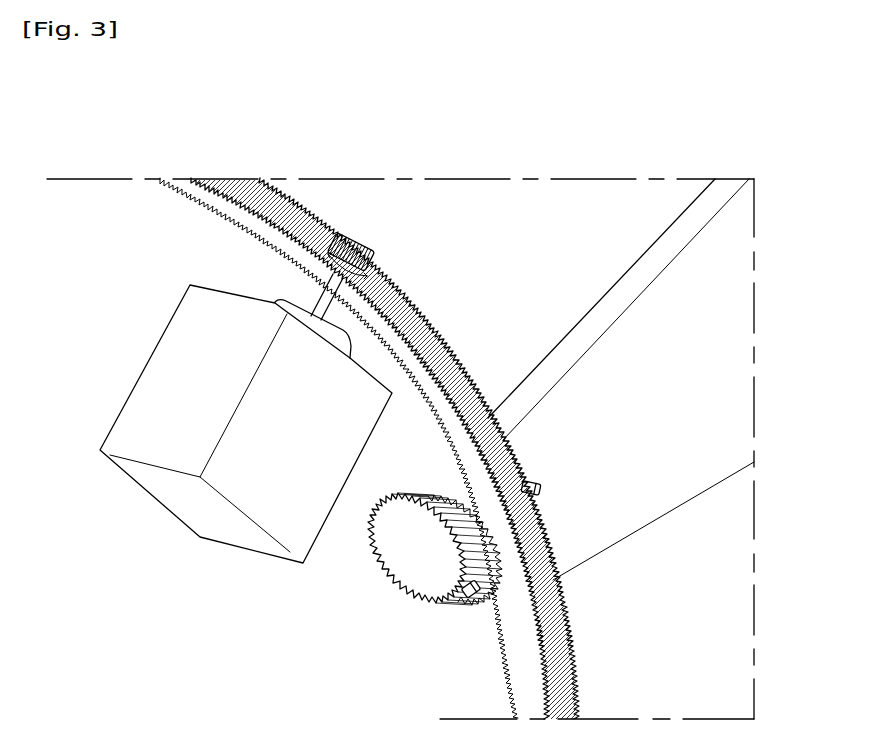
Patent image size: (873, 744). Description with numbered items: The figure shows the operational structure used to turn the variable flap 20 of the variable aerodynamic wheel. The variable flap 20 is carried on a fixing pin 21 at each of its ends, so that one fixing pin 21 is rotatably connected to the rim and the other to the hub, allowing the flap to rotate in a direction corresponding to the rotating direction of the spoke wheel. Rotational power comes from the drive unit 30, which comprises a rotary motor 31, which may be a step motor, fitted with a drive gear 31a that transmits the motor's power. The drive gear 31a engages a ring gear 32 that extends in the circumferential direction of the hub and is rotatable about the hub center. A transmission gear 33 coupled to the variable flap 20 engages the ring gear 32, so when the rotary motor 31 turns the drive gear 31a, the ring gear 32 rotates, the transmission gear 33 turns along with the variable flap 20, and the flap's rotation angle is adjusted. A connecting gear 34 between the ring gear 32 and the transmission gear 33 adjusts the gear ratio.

The variable flap 20 is at (727, 345).
The fixing pin 21 is at (545, 488).
The drive unit 30 is at (77, 104).
The rotary motor 31 is at (157, 376).
The drive gear 31a is at (353, 238).
The ring gear 32 is at (412, 293).
The transmission gear 33 is at (403, 580).
The connecting gear 34 is at (477, 597).